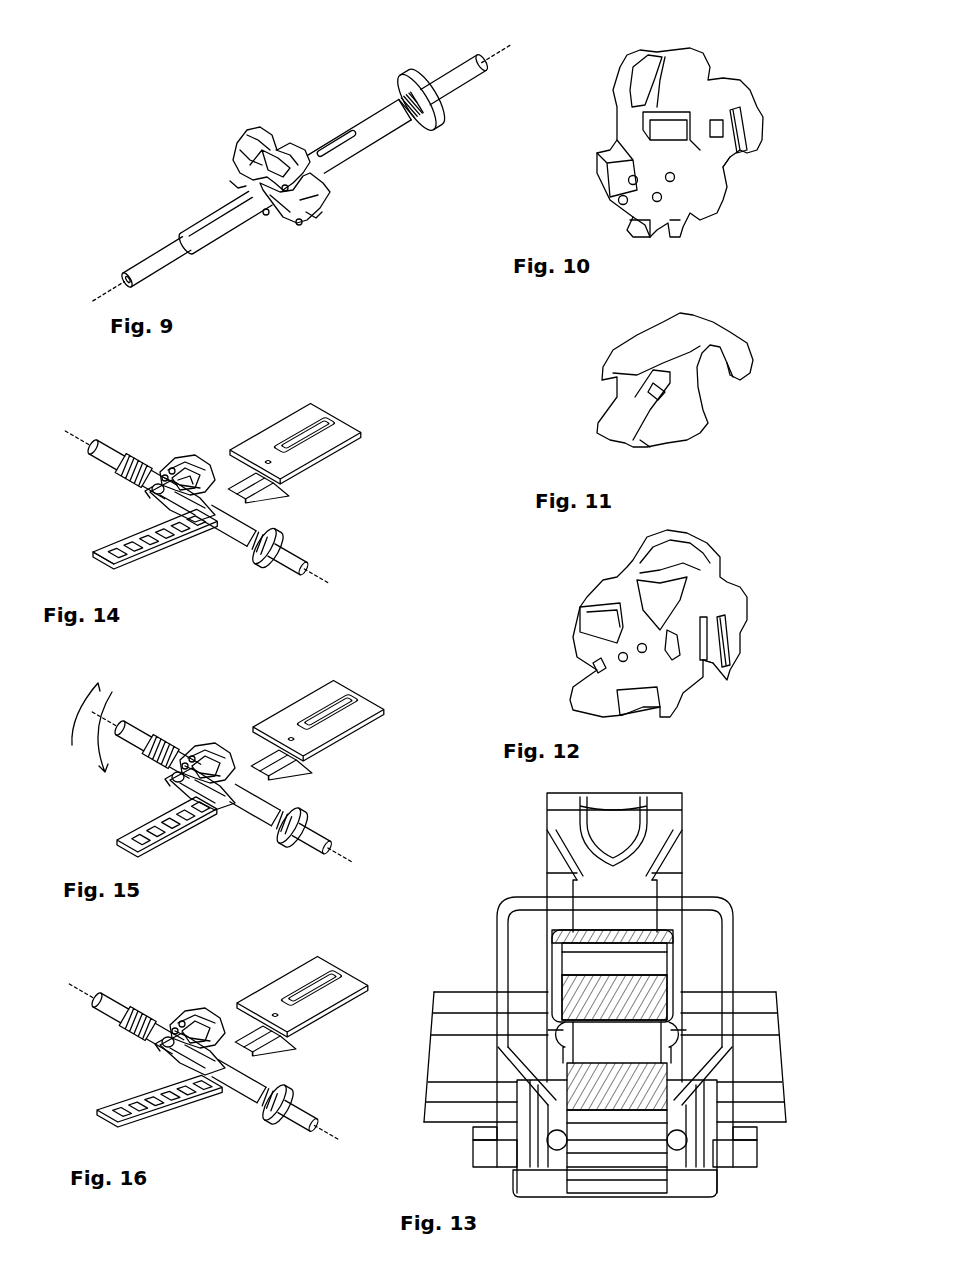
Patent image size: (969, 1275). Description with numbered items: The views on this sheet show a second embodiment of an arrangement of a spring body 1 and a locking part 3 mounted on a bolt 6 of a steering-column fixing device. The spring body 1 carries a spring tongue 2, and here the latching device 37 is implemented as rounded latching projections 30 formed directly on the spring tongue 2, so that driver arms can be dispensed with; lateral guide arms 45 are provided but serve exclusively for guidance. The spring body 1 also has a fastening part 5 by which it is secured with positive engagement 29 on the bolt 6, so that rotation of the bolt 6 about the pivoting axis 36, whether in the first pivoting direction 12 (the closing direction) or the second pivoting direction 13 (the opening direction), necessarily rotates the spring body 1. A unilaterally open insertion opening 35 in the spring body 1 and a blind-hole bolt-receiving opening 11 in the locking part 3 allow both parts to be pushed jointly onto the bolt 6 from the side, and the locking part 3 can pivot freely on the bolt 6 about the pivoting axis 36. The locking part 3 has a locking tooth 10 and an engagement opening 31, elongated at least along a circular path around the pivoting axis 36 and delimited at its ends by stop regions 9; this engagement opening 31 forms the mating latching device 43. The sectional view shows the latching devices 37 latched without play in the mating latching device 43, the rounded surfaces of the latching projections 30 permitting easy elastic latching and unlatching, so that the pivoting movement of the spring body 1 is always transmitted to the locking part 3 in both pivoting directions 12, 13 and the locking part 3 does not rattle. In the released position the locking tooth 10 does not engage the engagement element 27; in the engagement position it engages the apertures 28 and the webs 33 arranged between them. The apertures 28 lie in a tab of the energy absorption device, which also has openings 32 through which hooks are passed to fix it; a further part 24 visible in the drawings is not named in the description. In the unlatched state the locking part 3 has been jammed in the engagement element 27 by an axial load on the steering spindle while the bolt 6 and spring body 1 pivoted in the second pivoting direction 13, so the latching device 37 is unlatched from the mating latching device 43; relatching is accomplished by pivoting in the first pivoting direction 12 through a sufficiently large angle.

In FIG. 9, the spring body 1 is at (248, 150).
In FIG. 10, the spring body 1 is at (729, 68).
In FIG. 12, the spring body 1 is at (750, 572).
In FIG. 13, the spring body 1 is at (677, 862).
In FIG. 14, the spring body 1 is at (208, 472).
In FIG. 15, the spring body 1 is at (207, 763).
In FIG. 16, the spring body 1 is at (268, 1034).
In FIG. 9, the spring tongue 2 is at (283, 138).
In FIG. 10, the spring tongue 2 is at (617, 143).
In FIG. 12, the spring tongue 2 is at (607, 590).
In FIG. 13, the spring tongue 2 is at (637, 912).
In FIG. 14, the spring tongue 2 is at (178, 466).
In FIG. 15, the spring tongue 2 is at (206, 767).
In FIG. 16, the spring tongue 2 is at (180, 1010).
In FIG. 9, the locking part 3 is at (331, 194).
In FIG. 11, the locking part 3 is at (693, 350).
In FIG. 12, the locking part 3 is at (663, 623).
In FIG. 13, the locking part 3 is at (552, 968).
In FIG. 14, the locking part 3 is at (160, 507).
In FIG. 15, the locking part 3 is at (210, 818).
In FIG. 16, the locking part 3 is at (190, 1100).
In FIG. 9, the fastening part 5 is at (230, 184).
In FIG. 10, the fastening part 5 is at (737, 137).
In FIG. 12, the fastening part 5 is at (720, 627).
In FIG. 9, the bolt 6 is at (368, 122).
In FIG. 13, the bolt 6 is at (758, 1014).
In FIG. 14, the bolt 6 is at (237, 537).
In FIG. 15, the bolt 6 is at (263, 822).
In FIG. 16, the bolt 6 is at (238, 1087).
In FIG. 11, the stop regions 9 is at (656, 381).
In FIG. 13, the stop regions 9 is at (600, 1043).
In FIG. 9, the locking tooth 10 is at (312, 218).
In FIG. 11, the locking tooth 10 is at (647, 450).
In FIG. 11, the bolt-receiving opening 11 is at (727, 396).
In FIG. 12, the bolt-receiving opening 11 is at (710, 664).
In FIG. 15, the first pivoting direction 12 is at (100, 703).
In FIG. 15, the second pivoting direction 13 is at (84, 732).
In FIG. 14, the plate 24 is at (340, 413).
In FIG. 15, the plate 24 is at (328, 682).
In FIG. 16, the plate 24 is at (302, 997).
In FIG. 14, the engagement element 27 is at (247, 493).
In FIG. 15, the engagement element 27 is at (273, 776).
In FIG. 16, the engagement element 27 is at (112, 1107).
In FIG. 14, the apertures 28 is at (150, 553).
In FIG. 15, the apertures 28 is at (167, 827).
In FIG. 9, the positive engagement 29 is at (265, 216).
In FIG. 9, the latching projections 30 is at (289, 238).
In FIG. 10, the latching projections 30 is at (619, 221).
In FIG. 12, the latching projections 30 is at (669, 701).
In FIG. 13, the latching projections 30 is at (604, 1117).
In FIG. 14, the latching projections 30 is at (139, 445).
In FIG. 15, the latching projections 30 is at (199, 816).
In FIG. 16, the latching projections 30 is at (166, 1002).
In FIG. 11, the engagement opening 31 is at (599, 417).
In FIG. 12, the engagement opening 31 is at (552, 688).
In FIG. 13, the engagement opening 31 is at (569, 1071).
In FIG. 14, the engagement opening 31 is at (104, 493).
In FIG. 15, the engagement opening 31 is at (119, 792).
In FIG. 16, the engagement opening 31 is at (162, 1094).
In FIG. 14, the openings 32 is at (315, 480).
In FIG. 15, the openings 32 is at (303, 697).
In FIG. 14, the webs 33 is at (123, 553).
In FIG. 10, the insertion opening 35 is at (747, 171).
In FIG. 12, the insertion opening 35 is at (742, 695).
In FIG. 9, the pivoting axis 36 is at (488, 53).
In FIG. 14, the pivoting axis 36 is at (317, 580).
In FIG. 15, the pivoting axis 36 is at (340, 856).
In FIG. 16, the pivoting axis 36 is at (320, 1130).
In FIG. 9, the latching device 37 is at (285, 192).
In FIG. 10, the latching device 37 is at (619, 200).
In FIG. 12, the latching device 37 is at (645, 653).
In FIG. 13, the latching device 37 is at (545, 1030).
In FIG. 14, the latching device 37 is at (160, 470).
In FIG. 15, the latching device 37 is at (194, 832).
In FIG. 16, the latching device 37 is at (162, 1028).
In FIG. 11, the mating latching device 43 is at (647, 398).
In FIG. 12, the mating latching device 43 is at (595, 663).
In FIG. 13, the mating latching device 43 is at (550, 1000).
In FIG. 14, the mating latching device 43 is at (150, 490).
In FIG. 15, the mating latching device 43 is at (170, 800).
In FIG. 16, the mating latching device 43 is at (154, 1098).
In FIG. 9, the lateral guide arms 45 is at (300, 225).
In FIG. 10, the lateral guide arms 45 is at (638, 234).